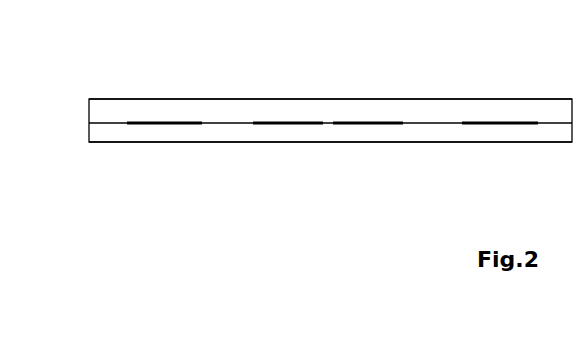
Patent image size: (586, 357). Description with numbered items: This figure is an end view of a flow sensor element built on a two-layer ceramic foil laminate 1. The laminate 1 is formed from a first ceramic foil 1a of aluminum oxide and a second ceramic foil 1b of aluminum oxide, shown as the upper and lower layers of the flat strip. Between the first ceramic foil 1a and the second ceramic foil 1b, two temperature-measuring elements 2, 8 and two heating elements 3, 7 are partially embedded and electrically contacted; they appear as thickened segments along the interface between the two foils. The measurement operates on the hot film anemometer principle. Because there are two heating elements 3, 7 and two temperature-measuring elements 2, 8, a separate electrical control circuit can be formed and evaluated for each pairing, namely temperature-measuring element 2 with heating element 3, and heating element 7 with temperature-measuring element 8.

The ceramic foil laminate 1 is at (441, 99).
The first ceramic foil 1a is at (117, 107).
The second ceramic foil 1b is at (120, 128).
The temperature-measuring element 2 is at (188, 123).
The heating element 3 is at (293, 123).
The heating element 7 is at (357, 123).
The temperature-measuring element 8 is at (510, 124).